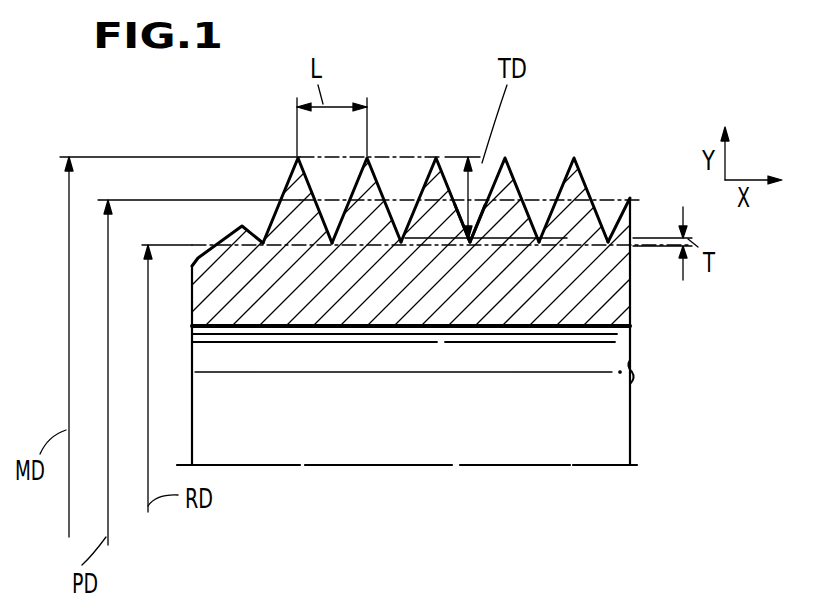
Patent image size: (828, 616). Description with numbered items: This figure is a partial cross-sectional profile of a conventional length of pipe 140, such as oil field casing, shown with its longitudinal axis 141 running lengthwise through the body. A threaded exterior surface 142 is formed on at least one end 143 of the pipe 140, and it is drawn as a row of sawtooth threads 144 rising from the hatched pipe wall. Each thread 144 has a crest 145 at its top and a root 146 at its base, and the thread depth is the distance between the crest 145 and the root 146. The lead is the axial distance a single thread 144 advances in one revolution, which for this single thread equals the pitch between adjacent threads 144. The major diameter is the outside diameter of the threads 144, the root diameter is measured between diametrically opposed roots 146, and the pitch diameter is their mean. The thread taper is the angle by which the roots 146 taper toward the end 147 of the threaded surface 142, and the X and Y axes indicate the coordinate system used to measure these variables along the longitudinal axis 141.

The length of pipe 140 is at (207, 232).
The longitudinal axis 141 is at (495, 466).
The threaded exterior surface 142 is at (560, 168).
The end 143 is at (618, 150).
The thread 144 is at (380, 170).
The crest 145 is at (432, 158).
The root 146 is at (467, 247).
The end of threaded surface 147 is at (198, 258).